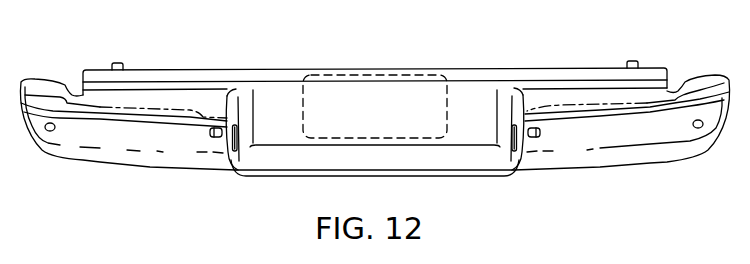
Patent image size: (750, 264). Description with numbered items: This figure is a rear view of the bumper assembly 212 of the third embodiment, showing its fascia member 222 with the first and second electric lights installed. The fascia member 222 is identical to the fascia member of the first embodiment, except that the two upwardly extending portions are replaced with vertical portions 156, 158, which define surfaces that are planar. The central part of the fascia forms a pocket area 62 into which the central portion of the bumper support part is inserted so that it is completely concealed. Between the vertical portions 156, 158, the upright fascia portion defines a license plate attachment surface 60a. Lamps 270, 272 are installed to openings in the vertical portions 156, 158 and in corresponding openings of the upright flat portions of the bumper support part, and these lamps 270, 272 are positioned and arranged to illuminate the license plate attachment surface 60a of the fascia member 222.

The bumper assembly 212 is at (572, 42).
The fascia member 222 is at (159, 70).
The pocket area 62 is at (278, 177).
The license plate attachment surface 60a is at (352, 101).
The vertical portion 156 is at (240, 95).
The vertical portion 158 is at (511, 94).
The lamp 270 is at (238, 129).
The lamp 272 is at (511, 129).